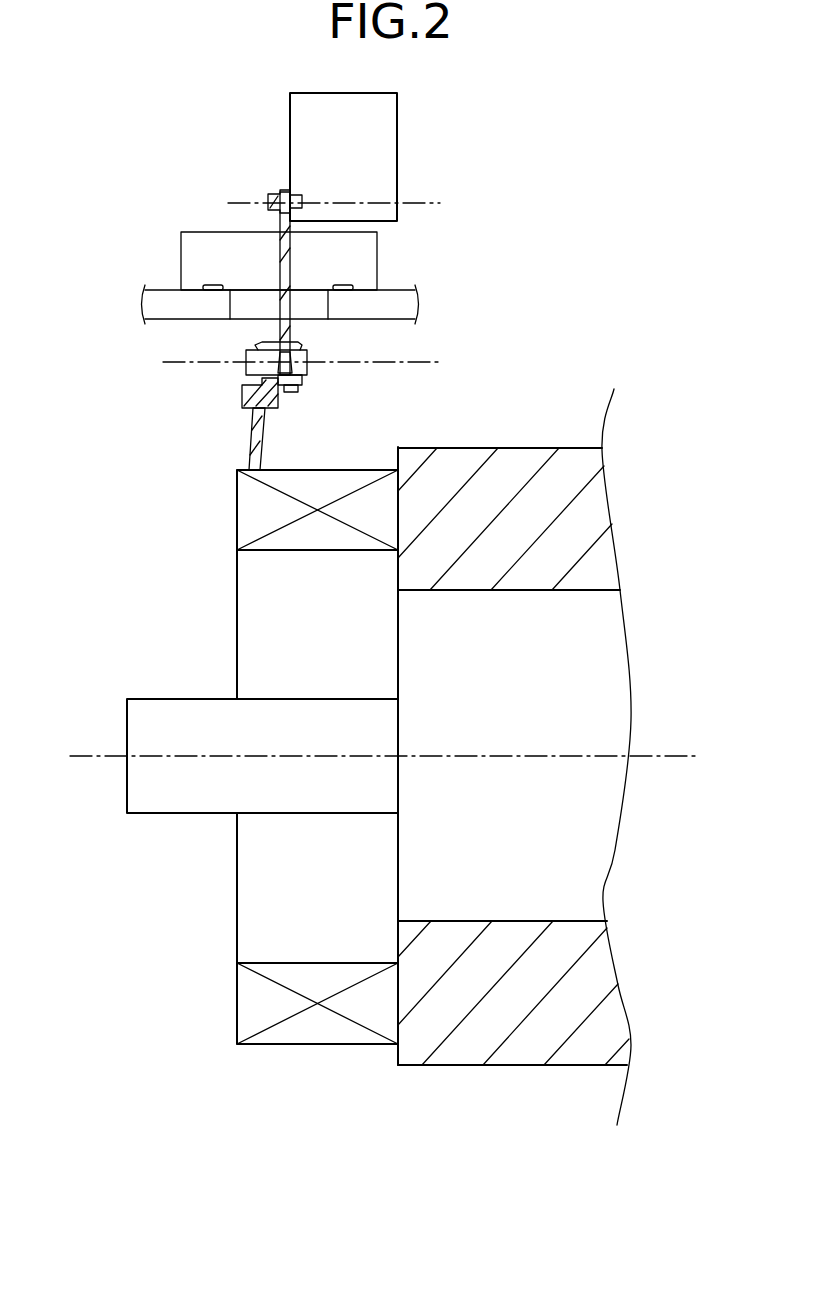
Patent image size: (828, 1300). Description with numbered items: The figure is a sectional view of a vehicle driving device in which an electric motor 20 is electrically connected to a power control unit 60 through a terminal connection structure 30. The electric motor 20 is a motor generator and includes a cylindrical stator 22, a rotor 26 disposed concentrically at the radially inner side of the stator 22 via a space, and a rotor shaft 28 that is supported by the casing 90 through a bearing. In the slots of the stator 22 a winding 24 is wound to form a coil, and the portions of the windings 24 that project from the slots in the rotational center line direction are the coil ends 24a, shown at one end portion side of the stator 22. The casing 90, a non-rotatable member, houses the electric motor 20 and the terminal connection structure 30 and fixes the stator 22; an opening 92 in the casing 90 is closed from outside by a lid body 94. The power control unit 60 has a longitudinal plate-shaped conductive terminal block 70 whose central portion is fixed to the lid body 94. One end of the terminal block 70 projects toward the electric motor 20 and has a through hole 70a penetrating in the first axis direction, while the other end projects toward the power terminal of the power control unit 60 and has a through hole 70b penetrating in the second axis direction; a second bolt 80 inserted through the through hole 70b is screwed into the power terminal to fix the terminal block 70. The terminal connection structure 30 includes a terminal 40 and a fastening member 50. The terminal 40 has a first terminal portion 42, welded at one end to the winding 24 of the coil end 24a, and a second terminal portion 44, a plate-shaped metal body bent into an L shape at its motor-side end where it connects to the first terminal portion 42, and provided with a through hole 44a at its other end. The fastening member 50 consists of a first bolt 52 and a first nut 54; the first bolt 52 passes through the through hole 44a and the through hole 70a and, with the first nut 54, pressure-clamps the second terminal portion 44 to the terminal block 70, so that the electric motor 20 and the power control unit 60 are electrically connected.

The electric motor 20 is at (374, 797).
The stator 22 is at (522, 477).
The winding 24 is at (279, 795).
The coil end 24a is at (327, 535).
The rotor 26 is at (585, 663).
The rotor shaft 28 is at (175, 796).
The terminal connection structure 30 is at (294, 281).
The terminal 40 is at (213, 398).
The first terminal portion 42 is at (253, 430).
The second terminal portion 44 is at (234, 368).
The through hole 44a is at (256, 352).
The fastening member 50 is at (325, 386).
The first bolt 52 is at (307, 367).
The first nut 54 is at (295, 388).
The power control unit 60 is at (416, 136).
The terminal block 70 is at (317, 269).
The through hole 70a is at (285, 355).
The through hole 70b is at (300, 200).
The second bolt 80 is at (268, 196).
The casing 90 is at (283, 263).
The opening 92 is at (240, 296).
The lid body 94 is at (190, 252).